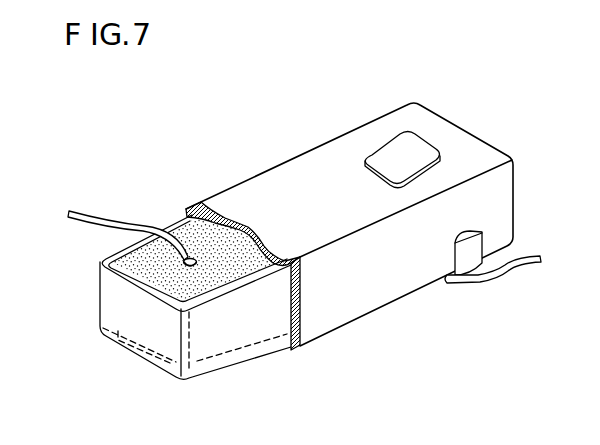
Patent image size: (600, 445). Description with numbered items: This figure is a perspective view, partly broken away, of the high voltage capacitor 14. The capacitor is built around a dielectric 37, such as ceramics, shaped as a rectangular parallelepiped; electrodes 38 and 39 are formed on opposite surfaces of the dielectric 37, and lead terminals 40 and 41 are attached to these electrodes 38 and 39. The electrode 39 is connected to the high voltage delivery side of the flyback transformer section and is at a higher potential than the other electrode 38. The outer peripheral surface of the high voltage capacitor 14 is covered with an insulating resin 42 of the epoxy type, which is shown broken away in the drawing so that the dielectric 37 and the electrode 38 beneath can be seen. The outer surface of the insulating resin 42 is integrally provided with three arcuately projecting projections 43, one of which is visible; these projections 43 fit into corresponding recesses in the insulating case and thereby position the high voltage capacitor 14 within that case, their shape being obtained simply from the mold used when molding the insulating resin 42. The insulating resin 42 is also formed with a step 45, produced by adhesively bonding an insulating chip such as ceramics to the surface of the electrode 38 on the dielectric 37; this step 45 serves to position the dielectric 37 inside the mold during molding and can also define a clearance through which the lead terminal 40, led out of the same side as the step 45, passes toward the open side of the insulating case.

The high voltage capacitor 14 is at (80, 282).
The dielectric 37 is at (112, 310).
The electrode 38 is at (187, 230).
The electrode 39 is at (167, 350).
The lead terminal 40 is at (88, 222).
The lead terminal 41 is at (480, 285).
The insulating resin 42 is at (335, 318).
The projection 43 is at (473, 253).
The step 45 is at (423, 152).